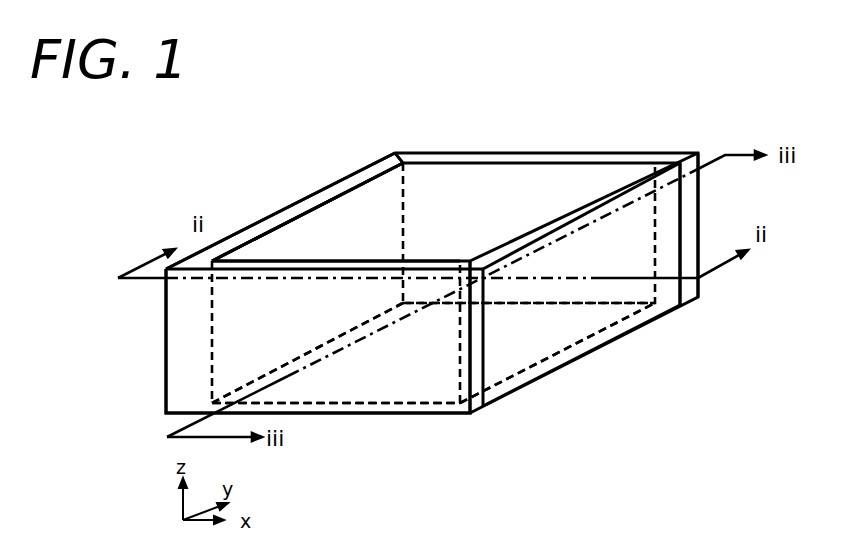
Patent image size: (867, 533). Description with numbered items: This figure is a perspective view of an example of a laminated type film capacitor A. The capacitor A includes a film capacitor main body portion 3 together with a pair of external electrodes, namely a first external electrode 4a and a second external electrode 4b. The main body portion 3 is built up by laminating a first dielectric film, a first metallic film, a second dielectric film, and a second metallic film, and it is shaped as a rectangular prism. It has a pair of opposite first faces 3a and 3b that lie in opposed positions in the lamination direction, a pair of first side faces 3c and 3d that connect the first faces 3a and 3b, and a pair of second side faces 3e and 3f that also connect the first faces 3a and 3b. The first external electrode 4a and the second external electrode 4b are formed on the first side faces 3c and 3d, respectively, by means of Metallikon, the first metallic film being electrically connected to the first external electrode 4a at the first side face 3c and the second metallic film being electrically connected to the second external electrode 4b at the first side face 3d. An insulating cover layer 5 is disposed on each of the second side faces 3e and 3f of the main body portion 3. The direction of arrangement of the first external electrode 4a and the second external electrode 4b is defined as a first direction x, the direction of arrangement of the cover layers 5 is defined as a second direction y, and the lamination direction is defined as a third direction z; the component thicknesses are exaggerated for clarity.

The laminated type film capacitor A is at (687, 82).
The film capacitor main body portion 3 is at (362, 222).
The first face 3a is at (415, 197).
The first face 3b is at (418, 373).
The first side face 3c is at (323, 232).
The first side face 3d is at (568, 313).
The second side face 3e is at (352, 366).
The second side face 3f is at (528, 202).
The first external electrode 4a is at (257, 230).
The second external electrode 4b is at (665, 233).
The insulating cover layer 5 is at (515, 162).